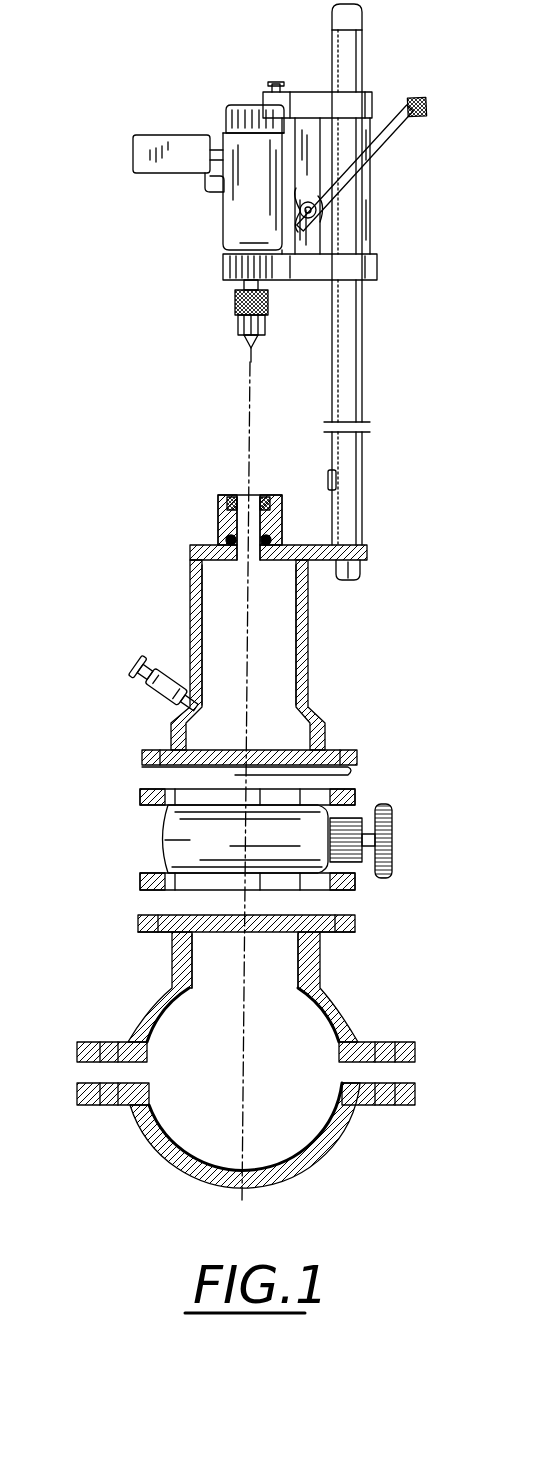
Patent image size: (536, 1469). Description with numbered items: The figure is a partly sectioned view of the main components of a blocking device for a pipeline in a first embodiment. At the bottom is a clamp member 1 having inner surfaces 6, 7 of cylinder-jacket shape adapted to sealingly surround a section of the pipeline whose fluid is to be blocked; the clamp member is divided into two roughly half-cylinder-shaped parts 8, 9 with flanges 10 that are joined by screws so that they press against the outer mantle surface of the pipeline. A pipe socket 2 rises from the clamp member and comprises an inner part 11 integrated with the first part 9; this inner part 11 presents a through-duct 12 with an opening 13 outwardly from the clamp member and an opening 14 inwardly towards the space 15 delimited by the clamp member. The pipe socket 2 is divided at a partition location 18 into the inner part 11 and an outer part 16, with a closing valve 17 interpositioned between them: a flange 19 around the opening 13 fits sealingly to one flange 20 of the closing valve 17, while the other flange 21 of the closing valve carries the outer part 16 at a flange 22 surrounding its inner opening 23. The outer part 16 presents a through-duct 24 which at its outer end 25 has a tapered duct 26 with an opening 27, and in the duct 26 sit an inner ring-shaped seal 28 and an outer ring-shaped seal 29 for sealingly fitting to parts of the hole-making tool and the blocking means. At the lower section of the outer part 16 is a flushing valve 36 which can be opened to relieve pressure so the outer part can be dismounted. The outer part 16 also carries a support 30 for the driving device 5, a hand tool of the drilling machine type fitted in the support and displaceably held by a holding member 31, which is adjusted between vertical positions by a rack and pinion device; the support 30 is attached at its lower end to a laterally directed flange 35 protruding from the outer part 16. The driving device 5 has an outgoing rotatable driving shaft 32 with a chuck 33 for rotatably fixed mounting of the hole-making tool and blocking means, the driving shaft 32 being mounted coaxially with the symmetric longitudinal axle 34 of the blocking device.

The clamp member 1 is at (265, 1058).
The pipe socket 2 is at (269, 955).
The driving device 5 is at (213, 250).
The inner surface 6 is at (290, 1175).
The inner surface 7 is at (332, 1052).
The half-cylinder-shaped part 8 is at (183, 1172).
The first part 9 is at (160, 1008).
The flange 10 is at (108, 1040).
The inner part 11 is at (178, 952).
The through-duct 12 is at (335, 994).
The opening 13 is at (300, 915).
The opening 14 is at (180, 990).
The space 15 is at (142, 1112).
The outer part 16 is at (192, 612).
The closing valve 17 is at (403, 830).
The partition location 18 is at (268, 827).
The flange 19 is at (170, 915).
The flange 20 is at (320, 896).
The flange 21 is at (320, 790).
The flange 22 is at (330, 752).
The inner opening 23 is at (320, 769).
The through-duct 24 is at (305, 672).
The outer end 25 is at (206, 518).
The tapered duct 26 is at (233, 512).
The opening 27 is at (245, 500).
The inner ring-shaped seal 28 is at (235, 545).
The outer ring-shaped seal 29 is at (258, 497).
The support 30 is at (368, 298).
The holding member 31 is at (318, 100).
The driving shaft 32 is at (243, 296).
The chuck 33 is at (235, 313).
The symmetric longitudinal axle 34 is at (250, 629).
The flange 35 is at (345, 572).
The flushing valve 36 is at (162, 668).